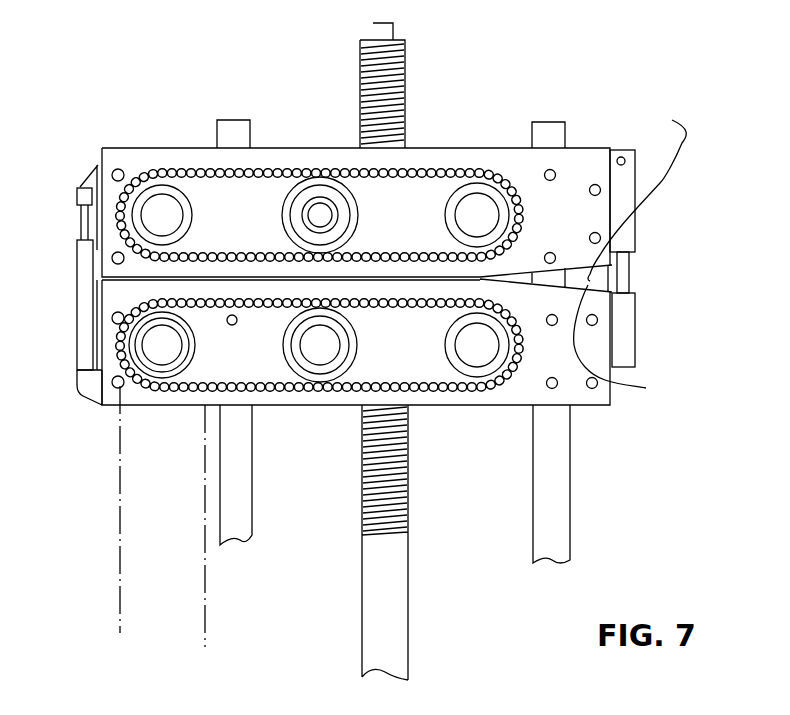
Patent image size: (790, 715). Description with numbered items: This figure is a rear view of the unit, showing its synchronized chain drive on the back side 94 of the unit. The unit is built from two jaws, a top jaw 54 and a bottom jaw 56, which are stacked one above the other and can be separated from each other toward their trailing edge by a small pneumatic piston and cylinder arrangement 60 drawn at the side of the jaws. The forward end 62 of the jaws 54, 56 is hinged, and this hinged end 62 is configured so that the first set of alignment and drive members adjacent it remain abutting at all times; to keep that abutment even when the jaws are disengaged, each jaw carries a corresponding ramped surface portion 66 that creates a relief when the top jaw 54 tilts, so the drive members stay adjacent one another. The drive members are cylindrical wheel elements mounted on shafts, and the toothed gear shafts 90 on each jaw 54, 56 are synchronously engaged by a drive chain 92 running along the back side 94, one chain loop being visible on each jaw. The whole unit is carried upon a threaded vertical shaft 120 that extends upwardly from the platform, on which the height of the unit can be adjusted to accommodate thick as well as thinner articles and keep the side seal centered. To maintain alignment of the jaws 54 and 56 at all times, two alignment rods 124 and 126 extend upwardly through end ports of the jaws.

The top jaw 54 is at (646, 210).
The bottom jaw 56 is at (643, 332).
The pneumatic piston and cylinder arrangement 60 is at (80, 305).
The forward end 62 is at (641, 272).
The ramped surface portion 66 is at (630, 262).
The toothed gear shafts 90 is at (186, 208).
The drive chain 92 is at (422, 165).
The back side 94 is at (514, 162).
The threaded vertical shaft 120 is at (405, 72).
The alignment rod 124 is at (235, 120).
The alignment rod 126 is at (546, 122).